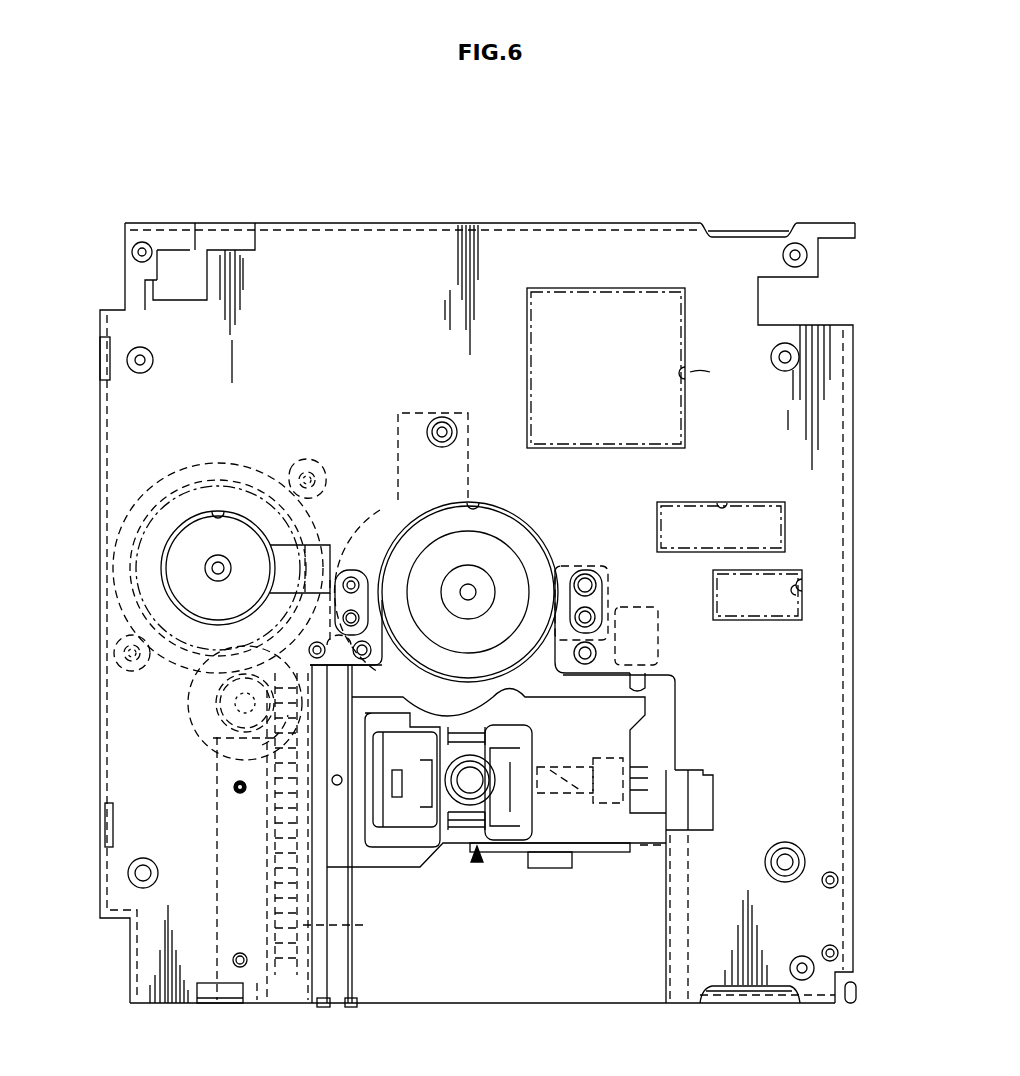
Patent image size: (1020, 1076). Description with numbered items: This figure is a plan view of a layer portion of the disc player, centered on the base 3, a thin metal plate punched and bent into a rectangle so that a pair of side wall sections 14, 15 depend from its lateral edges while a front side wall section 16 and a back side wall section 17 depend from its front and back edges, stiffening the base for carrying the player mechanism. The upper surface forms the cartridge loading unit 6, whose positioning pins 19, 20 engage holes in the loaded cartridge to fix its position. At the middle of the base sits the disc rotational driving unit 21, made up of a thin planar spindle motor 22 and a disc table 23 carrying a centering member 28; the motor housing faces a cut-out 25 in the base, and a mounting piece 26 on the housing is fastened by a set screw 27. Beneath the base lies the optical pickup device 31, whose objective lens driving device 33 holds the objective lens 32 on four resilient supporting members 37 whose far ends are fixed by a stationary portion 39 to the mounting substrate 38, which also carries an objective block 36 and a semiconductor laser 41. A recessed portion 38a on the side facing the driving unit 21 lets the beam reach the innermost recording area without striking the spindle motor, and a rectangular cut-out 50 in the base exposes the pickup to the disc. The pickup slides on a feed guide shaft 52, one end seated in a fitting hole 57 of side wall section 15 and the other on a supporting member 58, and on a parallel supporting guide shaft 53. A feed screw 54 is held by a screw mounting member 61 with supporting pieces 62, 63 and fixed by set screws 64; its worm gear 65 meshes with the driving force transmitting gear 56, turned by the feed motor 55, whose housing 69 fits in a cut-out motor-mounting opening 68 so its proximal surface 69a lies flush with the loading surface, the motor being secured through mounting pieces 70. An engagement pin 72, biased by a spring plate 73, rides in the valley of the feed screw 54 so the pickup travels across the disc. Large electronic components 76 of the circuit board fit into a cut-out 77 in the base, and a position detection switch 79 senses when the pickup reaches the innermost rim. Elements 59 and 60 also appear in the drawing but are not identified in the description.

The base 3 is at (832, 393).
The cartridge loading unit 6 is at (336, 290).
The side wall section 14 is at (525, 222).
The side wall section 15 is at (407, 1005).
The front side wall section 16 is at (100, 757).
The back side wall section 17 is at (852, 718).
The positioning pin 19 is at (128, 875).
The positioning pin 20 is at (805, 862).
The disc rotational driving unit 21 is at (398, 533).
The spindle motor 22 is at (520, 643).
The disc table 23 is at (533, 558).
The cut-out 25 is at (483, 502).
The mounting piece 26 is at (405, 413).
The set screw 27 is at (450, 420).
The centering member 28 is at (498, 552).
The optical pickup device 31 is at (477, 862).
The objective lens 32 is at (463, 785).
The objective lens driving device 33 is at (413, 812).
The objective block 36 is at (605, 817).
The resilient supporting member 37 is at (462, 742).
The mounting substrate 38 is at (647, 702).
The recessed portion 38a is at (520, 693).
The stationary portion 39 is at (508, 817).
The semiconductor laser 41 is at (632, 762).
The cut-out 50 is at (470, 1000).
The feed guide shaft 52 is at (343, 967).
The supporting guide shaft 53 is at (667, 928).
The feed screw 54 is at (351, 834).
The feed motor 55 is at (183, 537).
The driving force transmitting gear 56 is at (149, 786).
The fitting hole 57 is at (325, 1005).
The supporting member 58 is at (372, 683).
The support 59 is at (665, 1005).
The stopper 60 is at (710, 775).
The screw mounting member 61 is at (217, 842).
The supporting piece 62 is at (241, 794).
The supporting piece 63 is at (275, 1005).
The set screw 64 is at (237, 968).
The worm gear 65 is at (223, 740).
The cut-out motor-mounting opening 68 is at (220, 510).
The housing 69 is at (160, 566).
The proximal surface 69a is at (212, 600).
The mounting piece 70 is at (290, 503).
The engagement pin 72 is at (277, 822).
The spring plate 73 is at (307, 860).
The electronic components 76 is at (620, 300).
The cut-out 77 is at (690, 372).
The position detection switch 79 is at (775, 527).